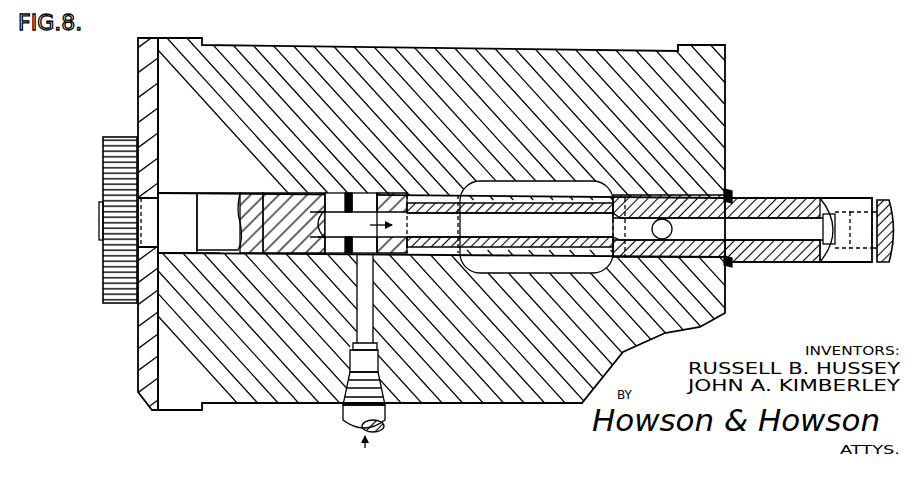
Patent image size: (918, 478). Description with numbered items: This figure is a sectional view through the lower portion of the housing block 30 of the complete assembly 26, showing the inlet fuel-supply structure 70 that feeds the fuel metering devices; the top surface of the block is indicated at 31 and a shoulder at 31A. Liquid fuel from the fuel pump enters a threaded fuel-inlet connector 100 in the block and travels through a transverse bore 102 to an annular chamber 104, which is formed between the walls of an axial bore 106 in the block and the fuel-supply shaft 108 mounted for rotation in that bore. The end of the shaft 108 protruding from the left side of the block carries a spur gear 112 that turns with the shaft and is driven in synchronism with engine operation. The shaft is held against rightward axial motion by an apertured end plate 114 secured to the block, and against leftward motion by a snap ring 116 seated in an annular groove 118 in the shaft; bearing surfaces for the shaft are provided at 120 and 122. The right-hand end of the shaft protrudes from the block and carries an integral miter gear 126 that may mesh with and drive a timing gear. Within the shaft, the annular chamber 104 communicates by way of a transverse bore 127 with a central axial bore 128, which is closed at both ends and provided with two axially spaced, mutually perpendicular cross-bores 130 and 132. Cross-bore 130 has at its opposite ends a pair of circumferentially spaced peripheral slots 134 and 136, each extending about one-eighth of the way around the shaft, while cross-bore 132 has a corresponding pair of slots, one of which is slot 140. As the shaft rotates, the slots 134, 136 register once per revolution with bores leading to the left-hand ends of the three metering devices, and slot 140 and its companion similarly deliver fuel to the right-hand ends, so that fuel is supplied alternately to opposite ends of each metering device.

The complete assembly 26 is at (304, 44).
The body top surface 31 is at (183, 38).
The body shoulder 31A is at (697, 46).
The housing block 30 is at (265, 393).
The apertured end plate 114 is at (142, 92).
The spur gear 112 is at (103, 211).
The fuel-supply shaft 108 is at (230, 228).
The axial bore 106 is at (220, 254).
The bearing surface 120 is at (284, 254).
The cross-bore 130 is at (325, 255).
The peripheral slot 134 is at (337, 193).
The peripheral slot 136 is at (340, 254).
The transverse bore 127 is at (372, 256).
The annular chamber 104 is at (372, 195).
The central axial bore 128 is at (536, 238).
The peripheral slot 140 is at (536, 227).
The cross-bore 132 is at (673, 230).
The inlet fuel-supply structure 70 is at (817, 190).
The snap ring 116 is at (730, 192).
The annular groove 118 is at (732, 264).
The bearing surface 122 is at (690, 259).
The miter gear 126 is at (886, 199).
The transverse bore 102 is at (372, 311).
The fuel-inlet connector 100 is at (386, 417).